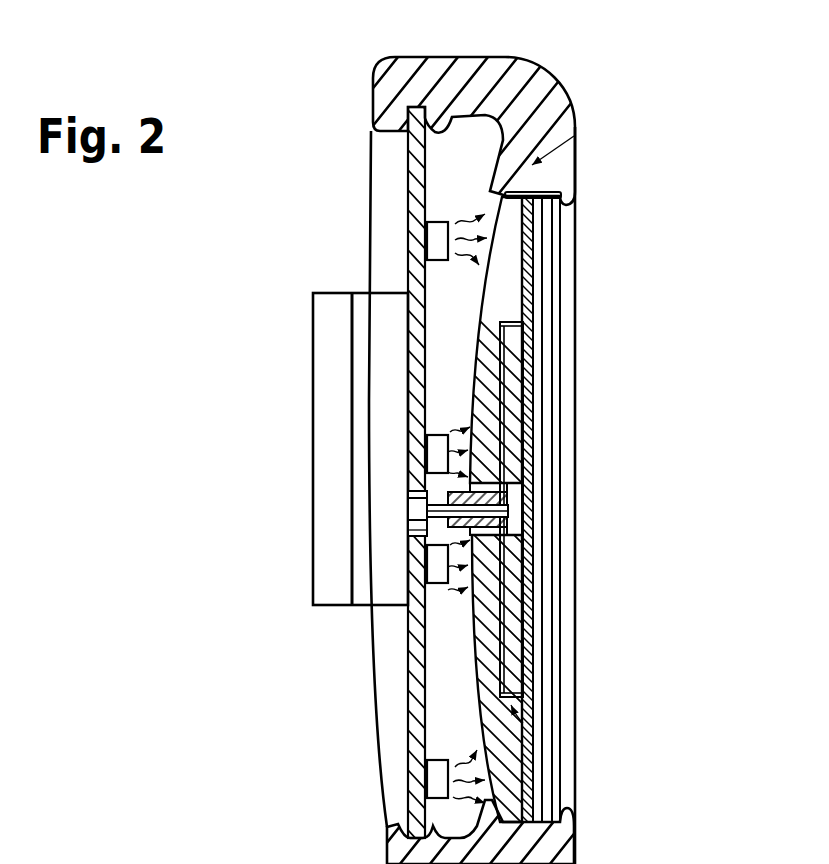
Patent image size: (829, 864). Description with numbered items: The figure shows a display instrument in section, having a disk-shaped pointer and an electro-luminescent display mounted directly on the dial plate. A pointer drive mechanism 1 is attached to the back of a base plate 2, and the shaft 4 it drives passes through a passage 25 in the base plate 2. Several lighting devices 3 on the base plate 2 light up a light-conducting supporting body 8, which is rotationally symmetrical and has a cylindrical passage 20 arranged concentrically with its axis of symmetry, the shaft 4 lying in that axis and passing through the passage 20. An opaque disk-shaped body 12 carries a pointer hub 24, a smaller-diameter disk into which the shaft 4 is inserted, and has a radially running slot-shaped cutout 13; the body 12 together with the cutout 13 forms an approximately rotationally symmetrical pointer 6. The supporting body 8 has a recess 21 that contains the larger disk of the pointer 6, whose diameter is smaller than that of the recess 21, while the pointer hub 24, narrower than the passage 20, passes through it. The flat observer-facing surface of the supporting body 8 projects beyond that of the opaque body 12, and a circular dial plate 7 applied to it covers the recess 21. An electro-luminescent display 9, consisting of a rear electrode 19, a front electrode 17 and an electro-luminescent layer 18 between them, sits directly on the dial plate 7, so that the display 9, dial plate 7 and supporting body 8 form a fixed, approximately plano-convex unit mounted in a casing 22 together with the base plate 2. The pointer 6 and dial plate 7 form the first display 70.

The pointer drive mechanism 1 is at (330, 342).
The base plate 2 is at (414, 165).
The lighting devices 3 is at (432, 450).
The shaft 4 is at (410, 537).
The pointer 6 is at (523, 723).
The dial plate 7 is at (533, 210).
The light-conducting supporting body 8 is at (490, 663).
The electro-luminescent display 9 is at (570, 713).
The opaque disk-shaped body 12 is at (510, 405).
The slot-shaped cutout 13 is at (510, 590).
The front electrode 17 is at (553, 783).
The electro-luminescent layer 18 is at (545, 673).
The rear electrode 19 is at (540, 457).
The cylindrical passage 20 is at (493, 487).
The recess 21 is at (540, 323).
The casing 22 is at (500, 58).
The pointer hub 24 is at (408, 492).
The passage 25 is at (408, 498).
The first display 70 is at (574, 136).